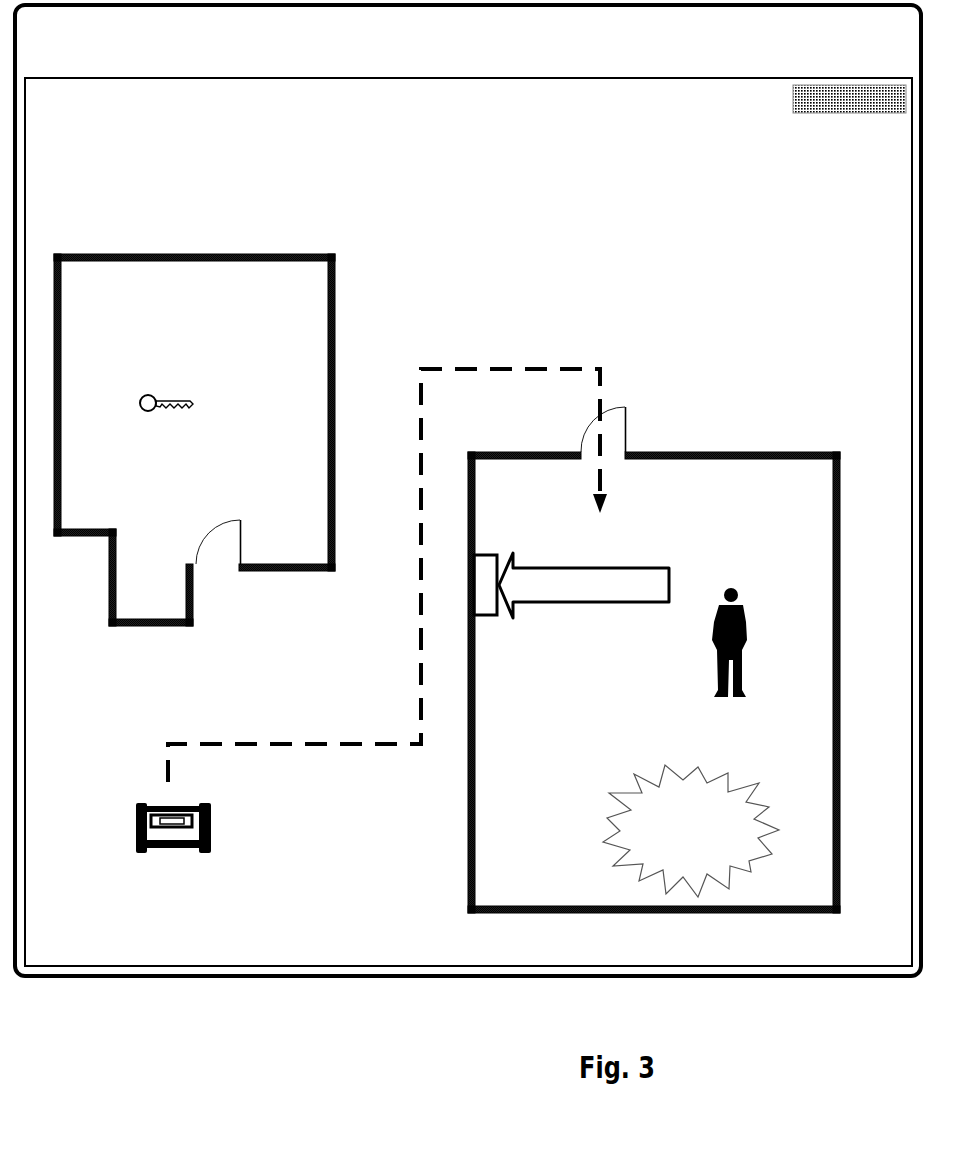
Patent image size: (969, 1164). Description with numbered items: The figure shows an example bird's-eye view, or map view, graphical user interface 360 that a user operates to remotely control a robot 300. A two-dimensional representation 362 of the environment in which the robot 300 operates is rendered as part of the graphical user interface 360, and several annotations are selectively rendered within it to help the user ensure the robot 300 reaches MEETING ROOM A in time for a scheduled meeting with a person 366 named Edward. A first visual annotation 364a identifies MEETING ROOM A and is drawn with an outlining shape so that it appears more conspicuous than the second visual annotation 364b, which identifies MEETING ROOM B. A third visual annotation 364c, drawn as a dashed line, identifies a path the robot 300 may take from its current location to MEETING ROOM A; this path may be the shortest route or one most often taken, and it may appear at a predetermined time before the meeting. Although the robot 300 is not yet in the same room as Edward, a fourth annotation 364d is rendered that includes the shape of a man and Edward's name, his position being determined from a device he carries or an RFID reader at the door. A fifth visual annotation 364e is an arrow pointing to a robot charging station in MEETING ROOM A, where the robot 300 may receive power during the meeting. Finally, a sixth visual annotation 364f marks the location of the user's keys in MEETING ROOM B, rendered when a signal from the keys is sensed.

The robot 300 is at (212, 830).
The graphical user interface 360 is at (562, 78).
The two-dimensional representation 362 is at (498, 200).
The first visual annotation 364a is at (590, 843).
The second visual annotation 364b is at (138, 300).
The third visual annotation 364c is at (492, 369).
The fourth annotation 364d is at (677, 678).
The fifth visual annotation 364e is at (643, 568).
The sixth visual annotation 364f is at (127, 410).
The person 366 is at (742, 622).